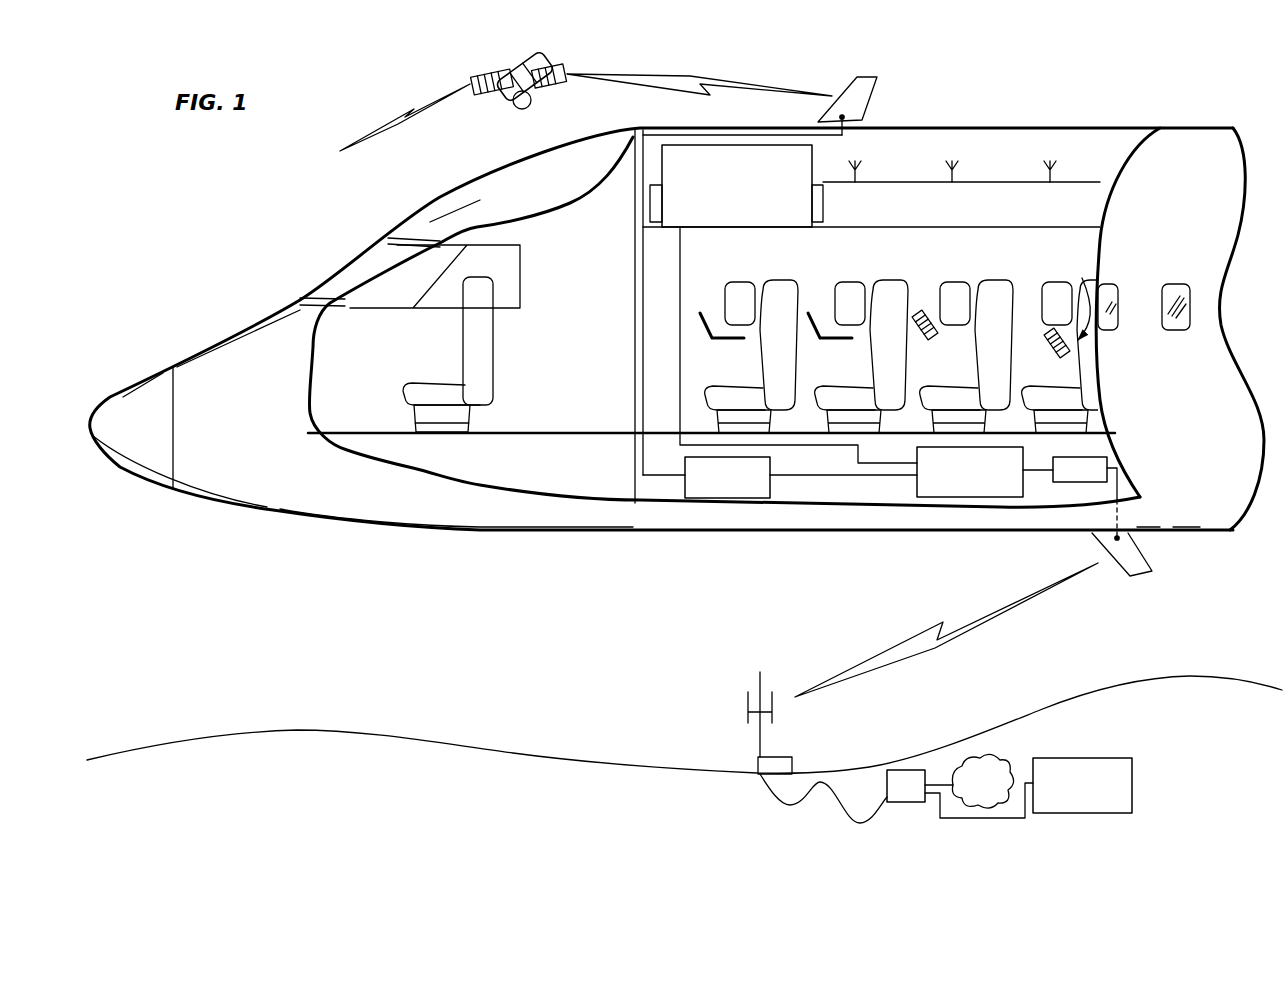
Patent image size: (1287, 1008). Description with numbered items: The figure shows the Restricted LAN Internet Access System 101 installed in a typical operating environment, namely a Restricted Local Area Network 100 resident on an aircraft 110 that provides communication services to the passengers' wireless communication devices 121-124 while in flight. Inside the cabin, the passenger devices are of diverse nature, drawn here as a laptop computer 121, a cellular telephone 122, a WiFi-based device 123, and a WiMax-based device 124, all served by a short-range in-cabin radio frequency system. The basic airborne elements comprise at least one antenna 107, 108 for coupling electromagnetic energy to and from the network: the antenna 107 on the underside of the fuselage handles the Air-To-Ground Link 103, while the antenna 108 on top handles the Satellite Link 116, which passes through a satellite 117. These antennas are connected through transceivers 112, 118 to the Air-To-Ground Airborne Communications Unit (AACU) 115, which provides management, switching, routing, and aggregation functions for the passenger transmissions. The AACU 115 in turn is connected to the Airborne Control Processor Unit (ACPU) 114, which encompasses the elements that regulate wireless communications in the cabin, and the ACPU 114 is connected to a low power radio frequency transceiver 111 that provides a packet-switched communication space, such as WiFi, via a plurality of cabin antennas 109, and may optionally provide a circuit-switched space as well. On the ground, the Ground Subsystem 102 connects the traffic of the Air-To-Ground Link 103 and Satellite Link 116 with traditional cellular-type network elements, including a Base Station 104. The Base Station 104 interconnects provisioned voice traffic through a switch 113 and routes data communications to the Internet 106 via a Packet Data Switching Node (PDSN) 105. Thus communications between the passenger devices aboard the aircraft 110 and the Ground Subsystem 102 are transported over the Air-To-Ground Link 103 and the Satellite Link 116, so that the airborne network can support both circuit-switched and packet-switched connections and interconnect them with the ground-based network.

The Restricted Local Area Network 100 is at (657, 318).
The Restricted LAN Internet Access System 101 is at (653, 222).
The Ground Subsystem 102 is at (826, 822).
The Air-To-Ground Link 103 is at (985, 623).
The Base Station 104 is at (796, 758).
The Packet Data Switching Node (PDSN) 105 is at (1000, 760).
The Internet 106 is at (1100, 758).
The antenna 107 is at (1153, 563).
The antenna 108 is at (858, 99).
The antennas 109 is at (956, 168).
The aircraft 110 is at (430, 205).
The low power radio frequency transceiver 111 is at (824, 208).
The transceiver 112 is at (1072, 483).
The switch 113 is at (928, 802).
The Airborne Control Processor Unit (ACPU) 114 is at (822, 157).
The Air-To-Ground Airborne Communications Unit (AACU) 115 is at (990, 497).
The Satellite Link 116 is at (631, 85).
The satellite 117 is at (497, 64).
The transceiver 118 is at (722, 498).
The laptop computer 121 is at (809, 311).
The cellular telephone 122 is at (931, 310).
The WiFi-based device 123 is at (1067, 360).
The WiMax-based device 124 is at (704, 311).